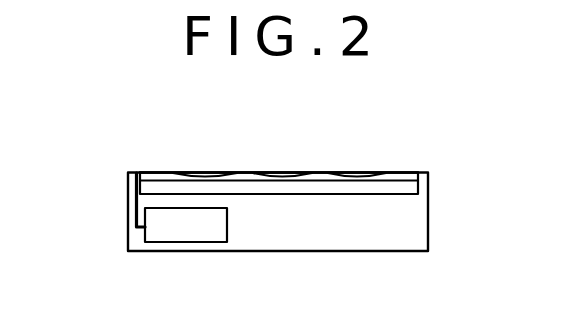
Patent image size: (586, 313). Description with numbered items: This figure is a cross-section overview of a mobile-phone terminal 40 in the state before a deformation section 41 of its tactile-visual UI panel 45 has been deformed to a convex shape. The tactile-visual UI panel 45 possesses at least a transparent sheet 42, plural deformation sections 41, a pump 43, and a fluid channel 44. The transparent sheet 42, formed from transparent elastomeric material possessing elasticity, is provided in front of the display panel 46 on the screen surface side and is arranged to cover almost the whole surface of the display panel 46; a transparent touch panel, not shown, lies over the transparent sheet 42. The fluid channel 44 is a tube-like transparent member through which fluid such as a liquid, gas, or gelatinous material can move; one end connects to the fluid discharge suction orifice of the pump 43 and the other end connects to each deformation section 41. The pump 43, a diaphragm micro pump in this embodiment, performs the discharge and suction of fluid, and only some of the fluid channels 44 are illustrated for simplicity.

The mobile-phone terminal 40 is at (116, 165).
The deformation section 41 is at (357, 172).
The transparent sheet 42 is at (430, 172).
The pump 43 is at (186, 243).
The fluid channel 44 is at (128, 207).
The tactile-visual UI panel 45 is at (388, 162).
The display panel 46 is at (420, 187).